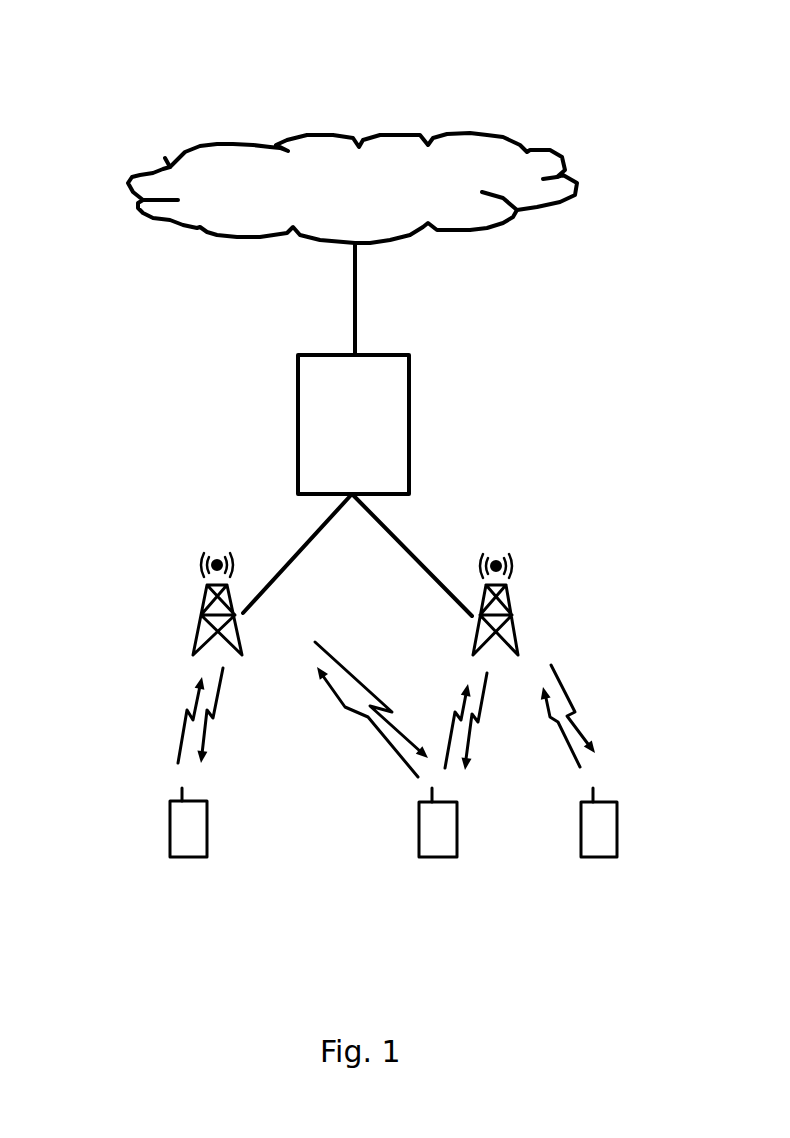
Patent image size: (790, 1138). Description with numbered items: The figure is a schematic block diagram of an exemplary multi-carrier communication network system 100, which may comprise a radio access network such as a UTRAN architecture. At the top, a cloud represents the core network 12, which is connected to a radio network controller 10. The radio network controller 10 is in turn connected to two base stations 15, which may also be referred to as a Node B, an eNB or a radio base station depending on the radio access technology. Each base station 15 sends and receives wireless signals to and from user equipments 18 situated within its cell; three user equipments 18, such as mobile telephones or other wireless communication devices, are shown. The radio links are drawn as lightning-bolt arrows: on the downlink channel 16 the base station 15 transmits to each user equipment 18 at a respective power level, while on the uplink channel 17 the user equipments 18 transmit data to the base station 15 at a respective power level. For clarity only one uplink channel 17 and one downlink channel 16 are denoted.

The multi-carrier communication network system 100 is at (92, 86).
The core network 12 is at (553, 152).
The radio network controller 10 is at (409, 380).
The base station 15 is at (210, 588).
The downlink channel 16 is at (325, 647).
The uplink channel 17 is at (185, 712).
The user equipment 18 is at (170, 820).